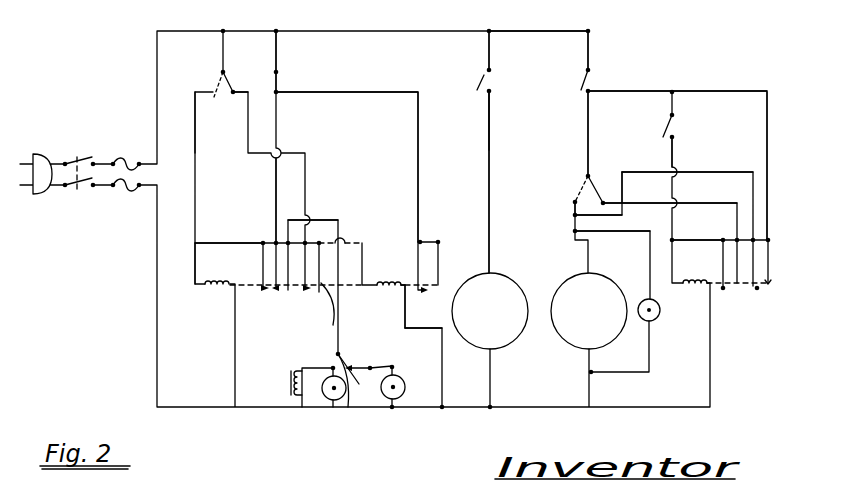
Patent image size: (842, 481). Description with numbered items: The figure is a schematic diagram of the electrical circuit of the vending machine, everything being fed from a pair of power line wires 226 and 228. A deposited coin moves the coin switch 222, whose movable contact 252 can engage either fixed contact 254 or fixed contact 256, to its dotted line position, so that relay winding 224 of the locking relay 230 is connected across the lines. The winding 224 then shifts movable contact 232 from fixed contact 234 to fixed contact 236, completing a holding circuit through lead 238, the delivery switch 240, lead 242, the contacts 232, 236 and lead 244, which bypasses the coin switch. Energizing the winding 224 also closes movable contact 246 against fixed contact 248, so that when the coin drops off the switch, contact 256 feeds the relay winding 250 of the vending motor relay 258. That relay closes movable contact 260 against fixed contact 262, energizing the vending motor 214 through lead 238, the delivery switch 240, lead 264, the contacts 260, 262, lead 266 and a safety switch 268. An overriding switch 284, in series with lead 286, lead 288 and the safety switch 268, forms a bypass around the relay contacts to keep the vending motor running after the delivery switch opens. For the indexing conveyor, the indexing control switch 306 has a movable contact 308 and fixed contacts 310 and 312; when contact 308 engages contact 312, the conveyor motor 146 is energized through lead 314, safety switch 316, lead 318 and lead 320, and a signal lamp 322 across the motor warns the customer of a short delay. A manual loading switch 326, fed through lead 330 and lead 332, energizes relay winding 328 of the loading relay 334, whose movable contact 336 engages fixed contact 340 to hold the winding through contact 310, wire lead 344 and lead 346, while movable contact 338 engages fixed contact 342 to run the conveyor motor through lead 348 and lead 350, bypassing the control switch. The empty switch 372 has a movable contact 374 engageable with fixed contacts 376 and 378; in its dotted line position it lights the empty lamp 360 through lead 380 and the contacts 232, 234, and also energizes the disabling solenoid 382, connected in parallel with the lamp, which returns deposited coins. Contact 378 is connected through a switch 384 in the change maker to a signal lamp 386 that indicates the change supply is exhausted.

The indexing conveyor motor 146 is at (601, 340).
The vending motor 214 is at (504, 340).
The coin switch 222 is at (228, 72).
The relay winding 224 is at (219, 291).
The power line wire 226 is at (147, 162).
The power line wire 228 is at (147, 187).
The locking relay 230 is at (193, 280).
The movable contact 232 is at (274, 250).
The fixed contact 234 is at (288, 296).
The fixed contact 236 is at (266, 293).
The lead 238 is at (280, 50).
The delivery switch 240 is at (281, 82).
The lead 242 is at (275, 191).
The lead 244 is at (242, 232).
The movable contact 246 is at (318, 296).
The fixed contact 248 is at (306, 293).
The relay winding 250 is at (388, 283).
The movable contact 252 is at (217, 122).
The fixed contact 254 is at (214, 91).
The fixed contact 256 is at (238, 90).
The vending motor relay 258 is at (397, 287).
The movable contact 260 is at (440, 268).
The fixed contact 262 is at (417, 246).
The lead 264 is at (419, 133).
The lead 266 is at (420, 202).
The safety switch 268 is at (489, 206).
The overriding switch 284 is at (483, 88).
The lead 286 is at (491, 50).
The lead 288 is at (491, 120).
The indexing control switch 306 is at (578, 182).
The movable contact 308 is at (592, 170).
The fixed contact 310 is at (604, 198).
The fixed contact 312 is at (572, 203).
The lead 314 is at (588, 38).
The safety switch 316 is at (592, 84).
The lead 318 is at (590, 107).
The lead 320 is at (572, 231).
The signal lamp 322 is at (651, 321).
The loading switch 326 is at (668, 131).
The relay winding 328 is at (693, 287).
The lead 330 is at (644, 92).
The lead 332 is at (673, 161).
The loading relay 334 is at (775, 265).
The movable contact 336 is at (740, 288).
The movable contact 338 is at (768, 285).
The fixed contact 340 is at (722, 293).
The fixed contact 342 is at (759, 291).
The wire lead 344 is at (673, 210).
The lead 346 is at (673, 244).
The lead 348 is at (768, 168).
The lead 350 is at (673, 178).
The empty lamp 360 is at (326, 400).
The empty switch 372 is at (334, 356).
The movable contact 374 is at (343, 358).
The fixed contact 376 is at (349, 406).
The fixed contact 378 is at (349, 370).
The lead 380 is at (306, 218).
The disabling solenoid 382 is at (292, 378).
The switch 384 is at (382, 365).
The signal lamp 386 is at (402, 391).